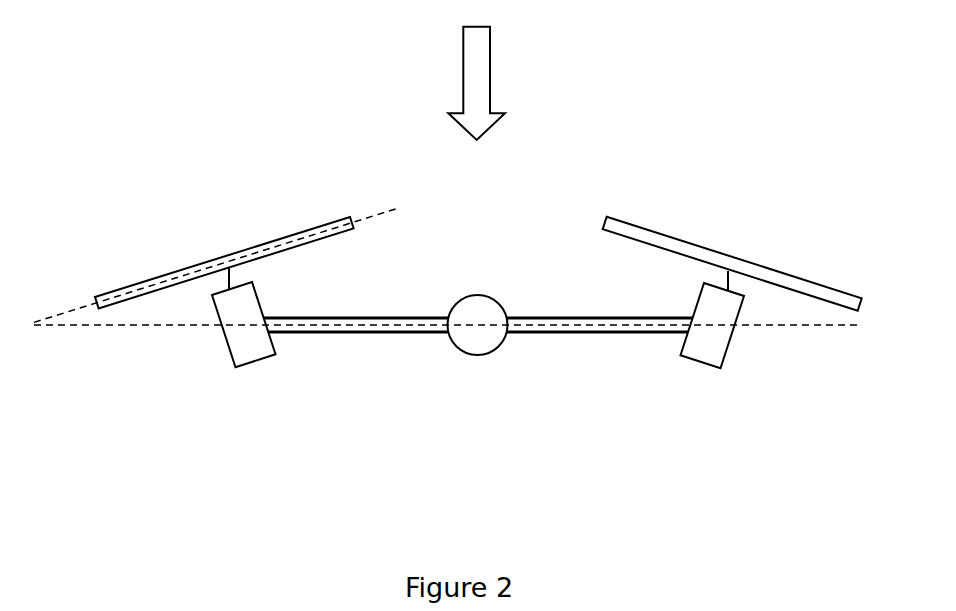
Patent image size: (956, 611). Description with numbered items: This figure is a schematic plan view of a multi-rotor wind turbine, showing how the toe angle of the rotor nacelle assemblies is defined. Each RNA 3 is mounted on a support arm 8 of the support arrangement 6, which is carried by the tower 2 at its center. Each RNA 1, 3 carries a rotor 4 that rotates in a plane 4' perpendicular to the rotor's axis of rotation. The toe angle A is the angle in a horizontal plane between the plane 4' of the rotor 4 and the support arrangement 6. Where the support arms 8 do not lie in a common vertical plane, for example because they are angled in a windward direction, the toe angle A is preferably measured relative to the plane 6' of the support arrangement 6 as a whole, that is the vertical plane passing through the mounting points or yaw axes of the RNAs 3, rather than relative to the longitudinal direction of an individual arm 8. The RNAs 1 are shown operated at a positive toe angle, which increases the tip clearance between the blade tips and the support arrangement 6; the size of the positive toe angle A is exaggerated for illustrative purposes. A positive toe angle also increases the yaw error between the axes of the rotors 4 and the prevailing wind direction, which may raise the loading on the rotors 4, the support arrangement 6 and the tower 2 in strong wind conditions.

The RNA 1 is at (641, 138).
The tower 2 is at (498, 350).
The RNA 3 is at (265, 375).
The rotor 4 is at (224, 215).
The plane of the rotor 4' is at (217, 202).
The support arrangement 6 is at (695, 386).
The plane of the support arrangement 6' is at (448, 414).
The support arm 8 is at (357, 333).
The toe angle A is at (118, 305).